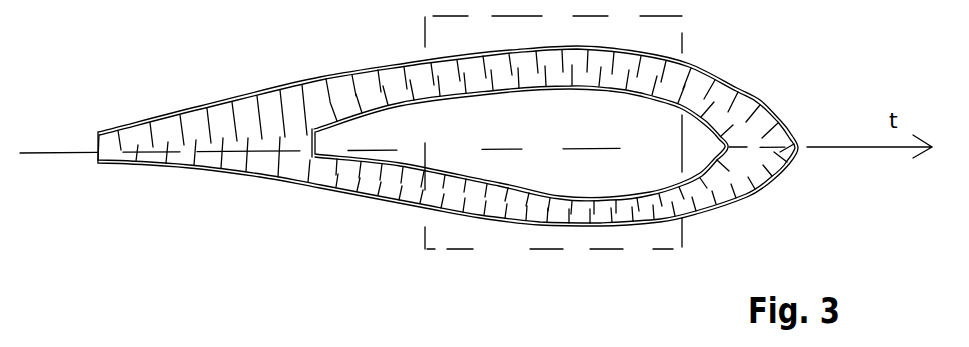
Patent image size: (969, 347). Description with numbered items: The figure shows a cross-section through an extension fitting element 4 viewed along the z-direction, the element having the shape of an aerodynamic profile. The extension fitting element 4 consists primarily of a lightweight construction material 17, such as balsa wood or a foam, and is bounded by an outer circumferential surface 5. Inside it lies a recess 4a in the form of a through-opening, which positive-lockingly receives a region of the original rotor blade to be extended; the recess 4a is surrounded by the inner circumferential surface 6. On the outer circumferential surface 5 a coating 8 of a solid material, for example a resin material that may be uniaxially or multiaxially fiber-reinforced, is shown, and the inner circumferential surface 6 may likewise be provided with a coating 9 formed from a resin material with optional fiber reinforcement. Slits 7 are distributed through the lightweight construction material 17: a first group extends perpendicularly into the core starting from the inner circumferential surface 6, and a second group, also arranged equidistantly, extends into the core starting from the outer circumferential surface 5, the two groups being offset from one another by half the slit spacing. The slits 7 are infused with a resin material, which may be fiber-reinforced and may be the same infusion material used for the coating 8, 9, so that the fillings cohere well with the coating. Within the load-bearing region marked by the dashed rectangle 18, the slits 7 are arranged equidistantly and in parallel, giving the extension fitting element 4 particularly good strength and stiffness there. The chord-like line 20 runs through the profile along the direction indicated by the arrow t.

The extension fitting element 4 is at (97, 147).
The recess 4a is at (642, 153).
The outer circumferential surface 5 is at (392, 62).
The inner circumferential surface 6 is at (438, 167).
The slits 7 is at (513, 213).
The coating 8 is at (320, 190).
The coating 9 is at (492, 178).
The lightweight construction material 17 is at (370, 190).
The dashed rectangle 18 is at (687, 44).
The chord line 20 is at (47, 160).